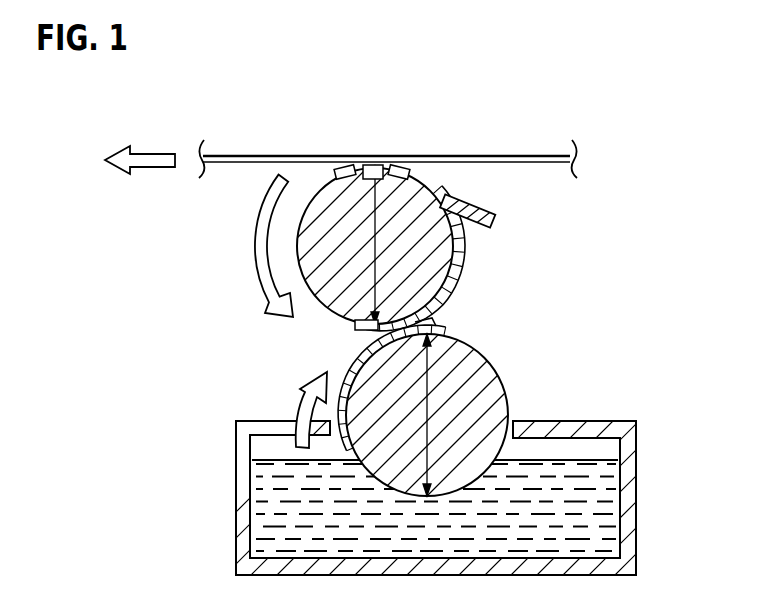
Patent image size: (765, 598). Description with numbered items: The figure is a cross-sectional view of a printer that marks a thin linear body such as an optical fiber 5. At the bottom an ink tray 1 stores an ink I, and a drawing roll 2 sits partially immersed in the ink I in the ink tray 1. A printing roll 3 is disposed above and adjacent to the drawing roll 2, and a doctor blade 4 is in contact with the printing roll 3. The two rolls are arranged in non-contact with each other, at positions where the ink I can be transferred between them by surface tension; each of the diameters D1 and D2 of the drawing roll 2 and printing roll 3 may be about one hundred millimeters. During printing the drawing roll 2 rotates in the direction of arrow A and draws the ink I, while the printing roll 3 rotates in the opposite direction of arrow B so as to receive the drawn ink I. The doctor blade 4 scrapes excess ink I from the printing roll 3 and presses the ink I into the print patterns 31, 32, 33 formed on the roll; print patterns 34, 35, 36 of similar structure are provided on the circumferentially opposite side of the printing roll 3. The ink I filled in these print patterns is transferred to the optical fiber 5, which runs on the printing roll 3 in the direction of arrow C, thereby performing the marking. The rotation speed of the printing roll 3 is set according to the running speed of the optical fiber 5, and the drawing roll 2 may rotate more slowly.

The ink tray 1 is at (601, 421).
The drawing roll 2 is at (478, 382).
The printing roll 3 is at (380, 250).
The doctor blade 4 is at (493, 208).
The optical fiber 5 is at (496, 155).
The print pattern 31 is at (345, 166).
The print pattern 32 is at (374, 166).
The print pattern 33 is at (399, 167).
The print pattern 34 is at (422, 320).
The print pattern 35 is at (428, 330).
The print pattern 36 is at (357, 326).
The ink I is at (614, 508).
The arrow A is at (302, 410).
The arrow B is at (260, 246).
The arrow C is at (140, 145).
The diameter of the drawing roll D1 is at (430, 418).
The diameter of the printing roll D2 is at (456, 262).